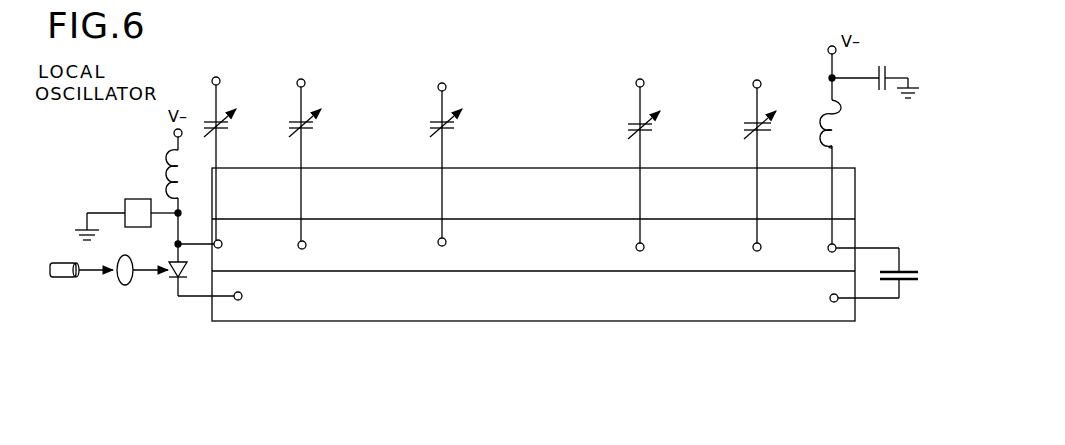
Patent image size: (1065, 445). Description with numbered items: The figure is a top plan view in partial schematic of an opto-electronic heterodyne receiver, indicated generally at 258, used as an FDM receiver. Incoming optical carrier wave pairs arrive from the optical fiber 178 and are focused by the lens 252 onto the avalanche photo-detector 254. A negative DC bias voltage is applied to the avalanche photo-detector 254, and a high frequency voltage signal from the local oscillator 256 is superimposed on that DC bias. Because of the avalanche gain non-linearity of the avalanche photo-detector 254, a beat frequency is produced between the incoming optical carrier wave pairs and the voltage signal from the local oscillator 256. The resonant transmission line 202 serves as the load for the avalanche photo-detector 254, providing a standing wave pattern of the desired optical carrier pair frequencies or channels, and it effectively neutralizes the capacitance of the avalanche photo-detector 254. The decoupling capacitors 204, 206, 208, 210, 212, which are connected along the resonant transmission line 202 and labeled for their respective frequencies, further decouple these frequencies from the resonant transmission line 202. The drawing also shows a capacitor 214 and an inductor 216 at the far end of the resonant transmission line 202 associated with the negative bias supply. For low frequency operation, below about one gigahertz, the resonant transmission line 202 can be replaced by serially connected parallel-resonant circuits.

The optical fiber 178 is at (62, 278).
The resonant transmission line 202 is at (453, 331).
The decoupling capacitor 204 is at (224, 129).
The decoupling capacitor 206 is at (309, 129).
The decoupling capacitor 208 is at (450, 129).
The decoupling capacitor 210 is at (648, 131).
The decoupling capacitor 212 is at (765, 131).
The capacitor 214 is at (905, 281).
The inductor 216 is at (838, 136).
The lens 252 is at (125, 285).
The avalanche photo-detector 254 is at (186, 281).
The local oscillator 256 is at (139, 199).
The opto-electronic heterodyne receiver 258 is at (529, 84).